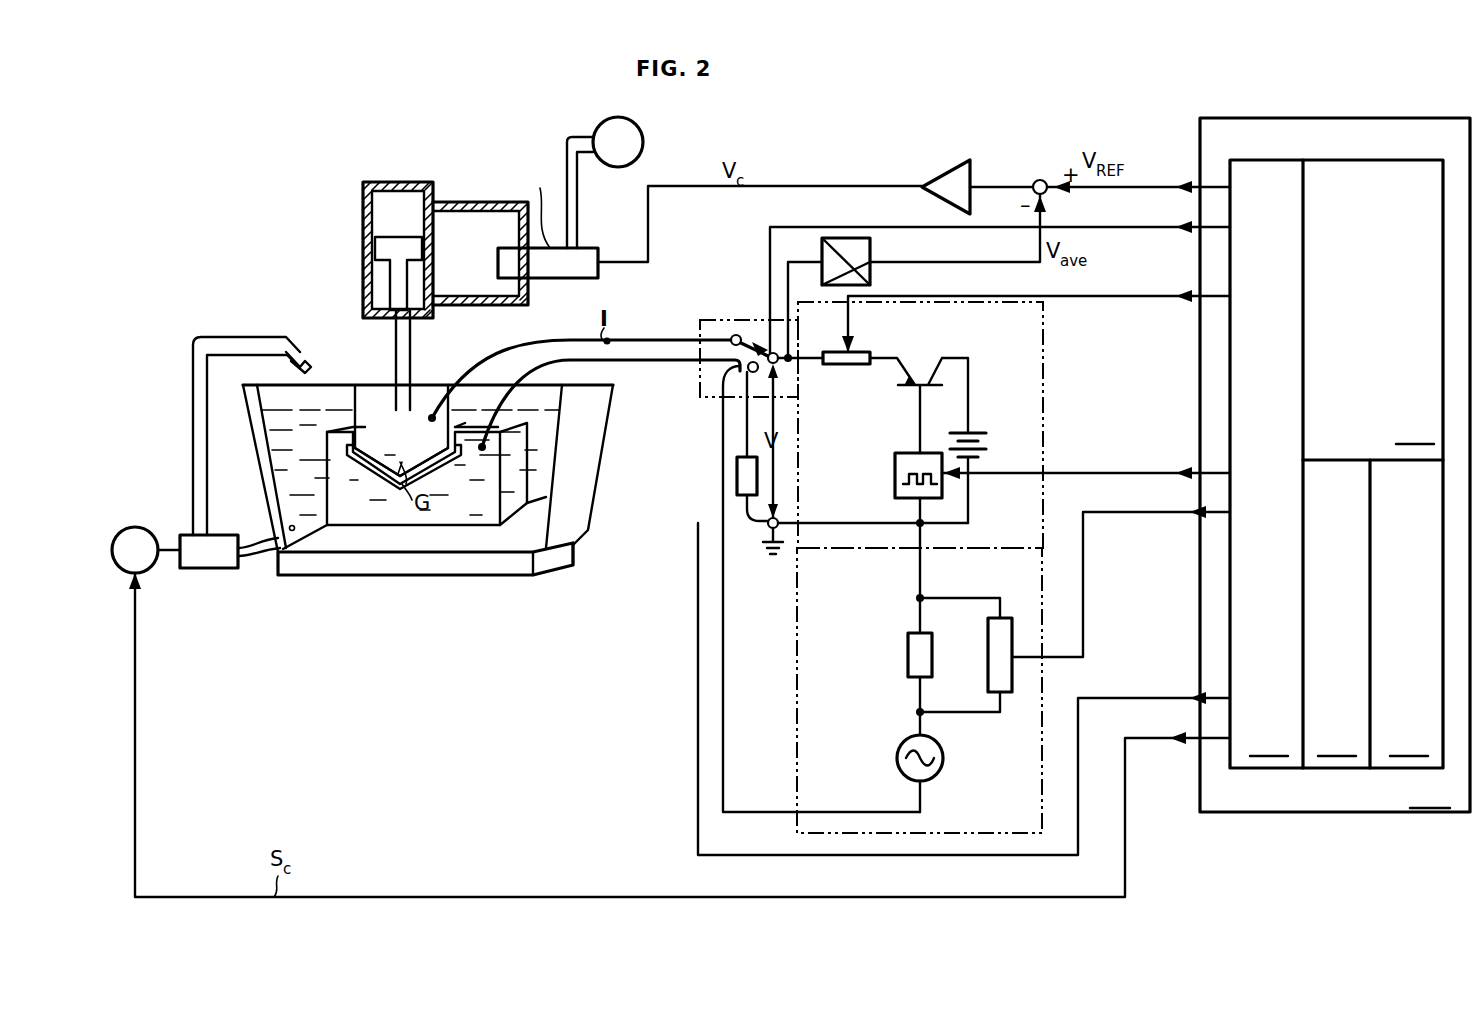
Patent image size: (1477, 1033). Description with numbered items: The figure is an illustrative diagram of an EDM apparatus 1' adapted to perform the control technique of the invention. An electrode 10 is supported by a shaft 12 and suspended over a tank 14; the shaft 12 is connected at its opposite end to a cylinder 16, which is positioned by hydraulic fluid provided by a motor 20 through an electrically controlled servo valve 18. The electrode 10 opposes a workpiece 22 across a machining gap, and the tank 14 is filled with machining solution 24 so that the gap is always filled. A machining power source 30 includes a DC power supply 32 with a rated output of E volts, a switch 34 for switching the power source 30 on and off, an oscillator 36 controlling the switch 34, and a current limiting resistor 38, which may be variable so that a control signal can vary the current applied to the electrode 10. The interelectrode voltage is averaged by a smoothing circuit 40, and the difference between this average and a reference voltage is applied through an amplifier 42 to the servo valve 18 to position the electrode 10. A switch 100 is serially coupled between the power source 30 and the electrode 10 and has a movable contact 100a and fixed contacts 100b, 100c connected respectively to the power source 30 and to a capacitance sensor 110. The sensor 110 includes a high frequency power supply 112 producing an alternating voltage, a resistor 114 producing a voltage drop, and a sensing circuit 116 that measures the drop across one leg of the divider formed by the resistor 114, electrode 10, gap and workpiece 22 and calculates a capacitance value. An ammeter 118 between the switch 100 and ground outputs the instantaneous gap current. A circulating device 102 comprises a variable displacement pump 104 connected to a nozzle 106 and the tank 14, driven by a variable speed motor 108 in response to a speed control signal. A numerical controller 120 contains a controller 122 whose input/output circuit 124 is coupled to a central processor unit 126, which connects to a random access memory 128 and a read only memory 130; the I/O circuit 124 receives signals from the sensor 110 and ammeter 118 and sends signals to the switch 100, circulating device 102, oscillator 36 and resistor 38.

The EDM apparatus 1' is at (296, 174).
The electrode 10 is at (370, 412).
The shaft 12 is at (412, 358).
The tank 14 is at (256, 480).
The cylinder 16 is at (404, 182).
The servo valve 18 is at (565, 278).
The motor 20 is at (643, 142).
The workpiece 22 is at (445, 574).
The machining solution 24 is at (286, 408).
The machining power source 30 is at (1048, 500).
The DC power supply 32 is at (976, 434).
The switch 34 is at (918, 380).
The oscillator 36 is at (890, 470).
The current limiting resistor 38 is at (860, 352).
The smoothing circuit 40 is at (870, 258).
The amplifier 42 is at (952, 164).
The switch 100 is at (784, 541).
The movable contact 100a is at (701, 330).
The fixed contact 100b is at (770, 338).
The fixed contact 100c is at (724, 382).
The circulating device 102 is at (228, 598).
The variable displacement pump 104 is at (209, 551).
The nozzle 106 is at (304, 350).
The variable speed motor 108 is at (140, 528).
The capacitance sensor 110 is at (1042, 700).
The high frequency power supply 112 is at (943, 762).
The resistor 114 is at (904, 640).
The sensing circuit 116 is at (986, 666).
The ammeter 118 is at (736, 472).
The numerical controller 120 is at (1335, 489).
The controller 122 is at (1334, 834).
The input/output circuit 124 is at (1275, 464).
The central processor unit 126 is at (1373, 384).
The random access memory 128 is at (1343, 614).
The read only memory 130 is at (1410, 675).